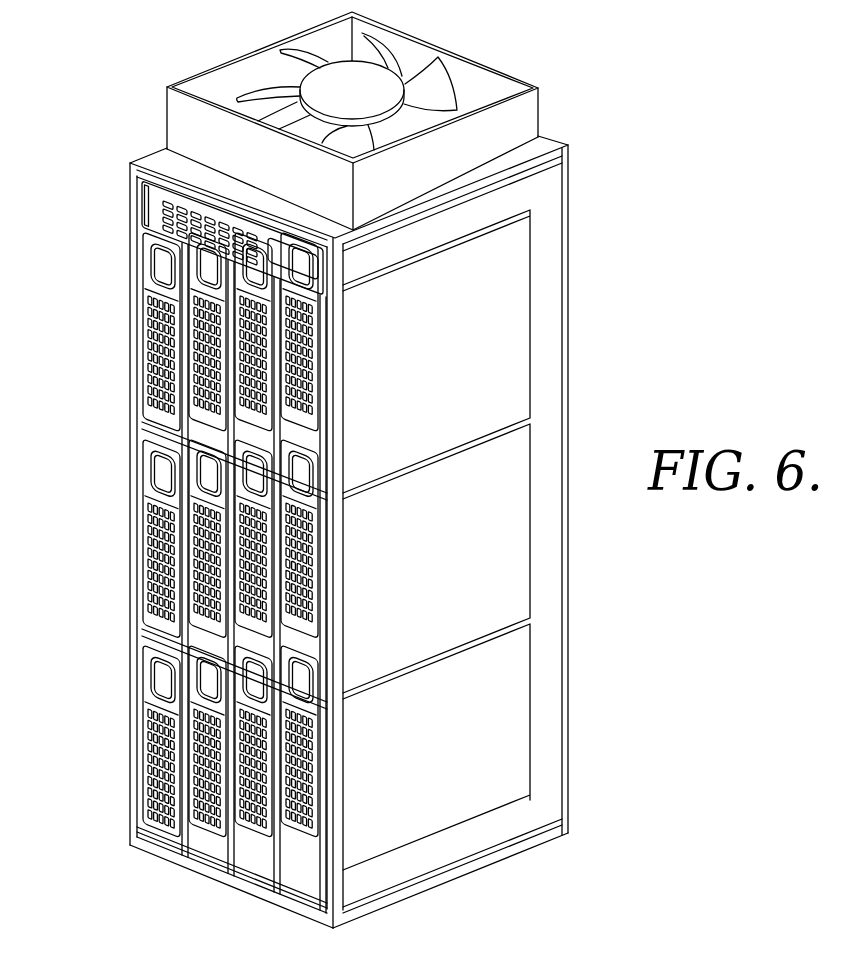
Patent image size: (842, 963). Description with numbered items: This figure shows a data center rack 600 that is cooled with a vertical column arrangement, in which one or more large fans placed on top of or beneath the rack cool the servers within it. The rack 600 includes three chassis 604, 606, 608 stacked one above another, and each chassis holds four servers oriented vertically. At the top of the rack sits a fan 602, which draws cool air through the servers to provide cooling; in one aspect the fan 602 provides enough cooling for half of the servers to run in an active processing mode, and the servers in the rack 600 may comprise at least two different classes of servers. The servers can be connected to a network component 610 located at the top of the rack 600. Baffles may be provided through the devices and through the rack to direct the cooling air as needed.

The rack 600 is at (86, 411).
The fan 602 is at (523, 123).
The chassis 604 is at (515, 312).
The chassis 606 is at (518, 518).
The chassis 608 is at (515, 733).
The network component 610 is at (142, 185).